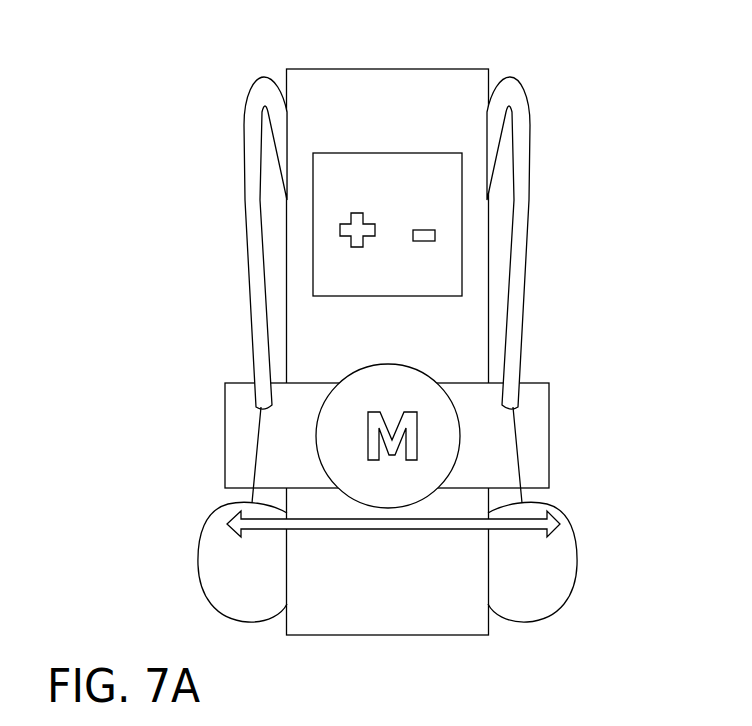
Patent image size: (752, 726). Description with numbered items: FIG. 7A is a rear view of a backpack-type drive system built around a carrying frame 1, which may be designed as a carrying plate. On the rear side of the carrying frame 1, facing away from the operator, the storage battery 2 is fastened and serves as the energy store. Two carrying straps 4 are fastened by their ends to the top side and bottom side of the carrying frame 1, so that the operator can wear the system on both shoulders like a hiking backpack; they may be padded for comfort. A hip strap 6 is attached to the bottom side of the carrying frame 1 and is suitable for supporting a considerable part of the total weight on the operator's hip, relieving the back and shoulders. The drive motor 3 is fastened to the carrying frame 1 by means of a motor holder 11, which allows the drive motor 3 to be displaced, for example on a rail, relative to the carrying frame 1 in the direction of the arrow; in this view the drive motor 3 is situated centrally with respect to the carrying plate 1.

The carrying frame 1 is at (348, 78).
The storage battery 2 is at (462, 267).
The drive motor 3 is at (461, 432).
The carrying straps 4 is at (248, 100).
The hip strap 6 is at (215, 571).
The motor holder 11 is at (549, 462).